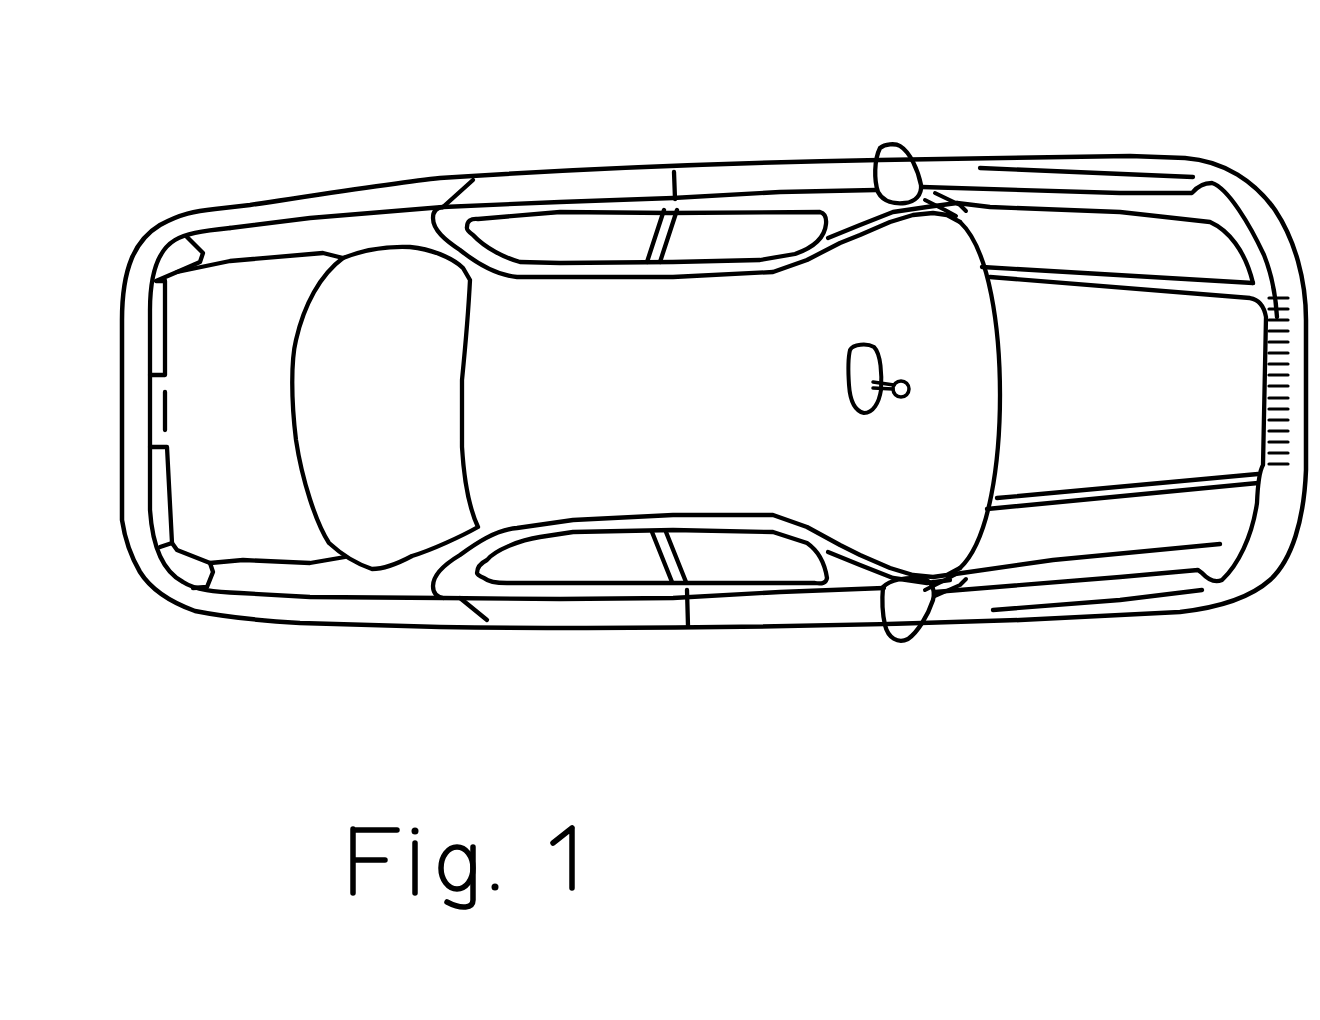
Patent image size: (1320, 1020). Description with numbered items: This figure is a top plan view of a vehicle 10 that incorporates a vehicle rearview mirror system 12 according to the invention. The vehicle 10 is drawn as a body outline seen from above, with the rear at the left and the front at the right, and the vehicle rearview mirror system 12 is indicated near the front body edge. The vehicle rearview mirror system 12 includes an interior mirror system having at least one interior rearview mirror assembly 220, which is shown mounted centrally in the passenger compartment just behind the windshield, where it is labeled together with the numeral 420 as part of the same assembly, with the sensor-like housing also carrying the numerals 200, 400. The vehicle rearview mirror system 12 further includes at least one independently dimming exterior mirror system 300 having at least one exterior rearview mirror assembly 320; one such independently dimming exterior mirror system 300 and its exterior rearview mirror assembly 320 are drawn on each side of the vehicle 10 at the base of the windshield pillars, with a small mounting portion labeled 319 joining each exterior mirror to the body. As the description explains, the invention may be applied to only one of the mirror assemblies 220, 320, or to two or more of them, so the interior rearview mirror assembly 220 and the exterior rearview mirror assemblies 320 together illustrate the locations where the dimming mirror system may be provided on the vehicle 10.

The vehicle 10 is at (1137, 153).
The vehicle rearview mirror system 12 is at (957, 157).
The sensor unit 200 is at (849, 380).
The sensor unit 400 is at (801, 390).
The interior rearview mirror assembly 220 is at (873, 407).
The sensor element 420 is at (912, 431).
The independently dimming exterior mirror system 300 is at (874, 160).
The mirror base 319 is at (965, 203).
The exterior rearview mirror assembly 320 is at (880, 146).